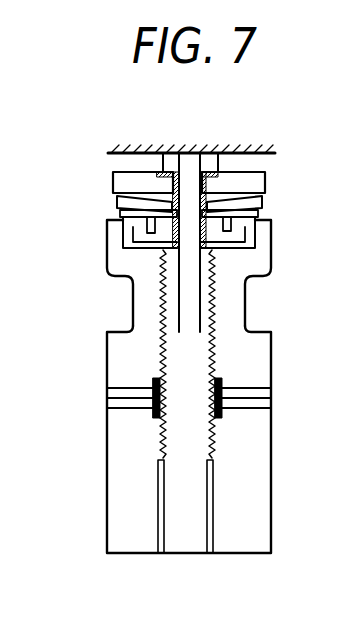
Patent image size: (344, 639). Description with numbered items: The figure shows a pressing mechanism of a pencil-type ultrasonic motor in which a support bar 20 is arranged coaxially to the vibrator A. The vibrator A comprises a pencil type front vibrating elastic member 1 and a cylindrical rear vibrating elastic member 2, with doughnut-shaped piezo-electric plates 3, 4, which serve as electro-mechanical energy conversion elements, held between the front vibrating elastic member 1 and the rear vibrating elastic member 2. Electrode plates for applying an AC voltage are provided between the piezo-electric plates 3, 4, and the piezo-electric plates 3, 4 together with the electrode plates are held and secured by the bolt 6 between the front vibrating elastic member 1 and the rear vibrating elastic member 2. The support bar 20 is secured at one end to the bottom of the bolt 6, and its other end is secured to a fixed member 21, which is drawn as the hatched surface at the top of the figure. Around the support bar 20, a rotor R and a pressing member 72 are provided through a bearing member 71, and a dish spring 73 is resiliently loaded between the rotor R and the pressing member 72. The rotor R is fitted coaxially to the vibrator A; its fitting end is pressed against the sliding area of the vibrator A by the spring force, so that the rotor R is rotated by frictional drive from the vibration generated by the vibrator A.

The fixed member 21 is at (143, 124).
The bearing member 71 is at (268, 166).
The pressing member 72 is at (266, 181).
The dish spring 73 is at (263, 205).
The rotor R is at (272, 222).
The front vibrating elastic member 1 is at (268, 266).
The rear vibrating elastic member 2 is at (258, 483).
The support bar 20 is at (203, 300).
The bolt 6 is at (203, 362).
The piezo-electric plate 3 is at (262, 392).
The piezo-electric plate 4 is at (263, 402).
The vibrator A is at (88, 332).